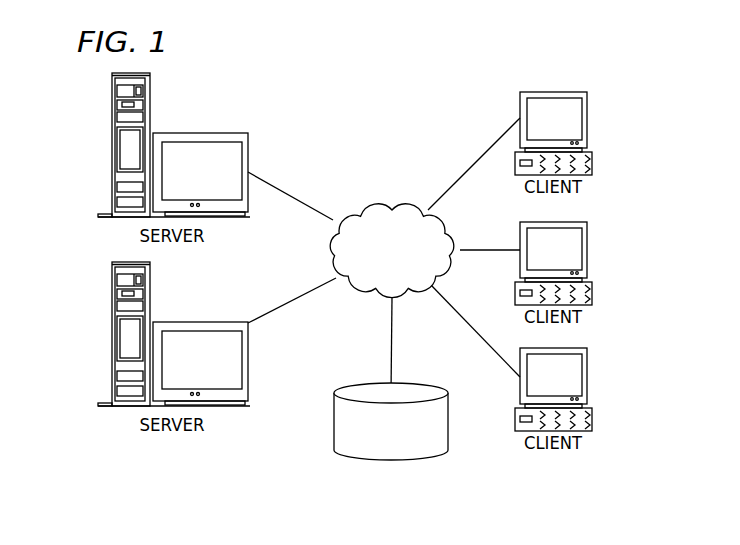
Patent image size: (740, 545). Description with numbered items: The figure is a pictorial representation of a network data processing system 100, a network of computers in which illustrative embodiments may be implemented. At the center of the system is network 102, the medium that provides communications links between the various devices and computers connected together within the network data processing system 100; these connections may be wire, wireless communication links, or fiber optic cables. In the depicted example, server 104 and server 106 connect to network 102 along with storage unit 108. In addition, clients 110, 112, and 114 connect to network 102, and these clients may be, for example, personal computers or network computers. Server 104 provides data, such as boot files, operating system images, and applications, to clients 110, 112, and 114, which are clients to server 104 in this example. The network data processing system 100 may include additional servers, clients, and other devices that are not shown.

The network data processing system 100 is at (439, 100).
The network 102 is at (366, 203).
The server 104 is at (112, 147).
The server 106 is at (112, 337).
The storage unit 108 is at (378, 461).
The client 110 is at (587, 118).
The client 112 is at (587, 248).
The client 114 is at (587, 378).